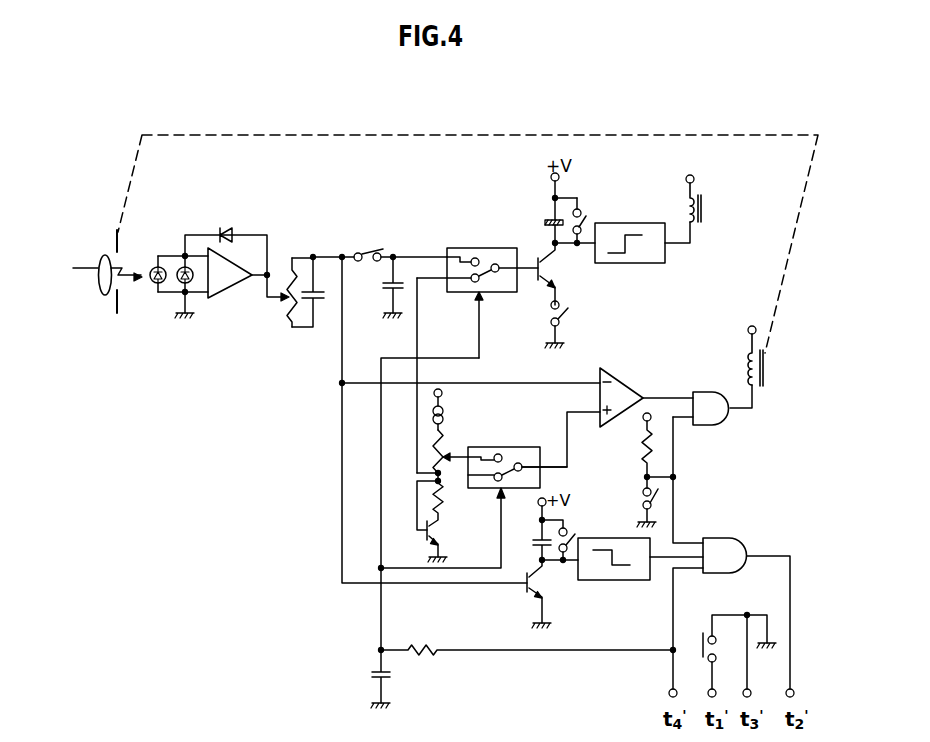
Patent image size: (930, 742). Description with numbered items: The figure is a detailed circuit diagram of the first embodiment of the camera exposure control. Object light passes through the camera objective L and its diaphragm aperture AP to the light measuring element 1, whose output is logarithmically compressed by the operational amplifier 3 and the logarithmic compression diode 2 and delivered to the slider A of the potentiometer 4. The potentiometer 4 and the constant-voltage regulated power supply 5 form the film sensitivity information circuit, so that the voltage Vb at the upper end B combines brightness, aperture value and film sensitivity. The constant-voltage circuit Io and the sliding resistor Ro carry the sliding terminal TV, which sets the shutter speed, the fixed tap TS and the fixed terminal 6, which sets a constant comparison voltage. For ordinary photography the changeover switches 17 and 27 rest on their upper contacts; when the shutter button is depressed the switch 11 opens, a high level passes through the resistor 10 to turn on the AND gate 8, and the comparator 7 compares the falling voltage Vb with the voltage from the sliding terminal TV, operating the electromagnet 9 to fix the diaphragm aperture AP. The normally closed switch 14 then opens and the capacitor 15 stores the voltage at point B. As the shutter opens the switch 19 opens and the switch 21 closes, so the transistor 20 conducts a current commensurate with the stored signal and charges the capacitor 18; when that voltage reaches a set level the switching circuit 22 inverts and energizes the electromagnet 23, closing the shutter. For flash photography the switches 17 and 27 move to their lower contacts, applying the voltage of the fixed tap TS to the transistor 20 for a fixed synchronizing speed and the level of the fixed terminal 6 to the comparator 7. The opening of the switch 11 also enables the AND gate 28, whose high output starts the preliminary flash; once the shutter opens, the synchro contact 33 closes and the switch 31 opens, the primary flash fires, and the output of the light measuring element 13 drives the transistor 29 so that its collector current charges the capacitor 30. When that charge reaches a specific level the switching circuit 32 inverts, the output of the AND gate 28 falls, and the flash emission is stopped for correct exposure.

The diaphragm aperture AP is at (117, 240).
The camera objective L is at (105, 295).
The light measuring element 1 is at (155, 284).
The light measuring element 13 is at (185, 254).
The logarithmic compression diode 2 is at (227, 227).
The operational amplifier 3 is at (230, 286).
The slider of potentiometer A is at (273, 298).
The potentiometer 4 is at (288, 318).
The constant-voltage regulated power supply 5 is at (317, 316).
The upper end of potentiometer B is at (313, 255).
The switch 14 is at (370, 254).
The capacitor 15 is at (388, 292).
The changeover switch 17 is at (482, 247).
The capacitor 18 is at (547, 222).
The switch 19 is at (583, 222).
The transistor 20 is at (543, 279).
The switch 21 is at (562, 321).
The switching circuit 22 is at (645, 264).
The electromagnet 23 is at (704, 204).
The comparator 7 is at (630, 378).
The AND gate 8 is at (708, 390).
The electromagnet 9 is at (767, 363).
The resistor 10 is at (642, 444).
The switch 11 is at (642, 493).
The changeover switch 27 is at (525, 447).
The AND gate 28 is at (728, 537).
The transistor 29 is at (522, 598).
The capacitor 30 is at (533, 542).
The switch 31 is at (570, 532).
The switching circuit 32 is at (607, 580).
The synchro contact 33 is at (702, 645).
The constant-voltage circuit Io is at (452, 401).
The sliding resistor Ro is at (437, 448).
The fixed tap of potentiometer Ro TS is at (416, 440).
The sliding terminal TV is at (458, 455).
The fixed terminal 6 is at (450, 480).